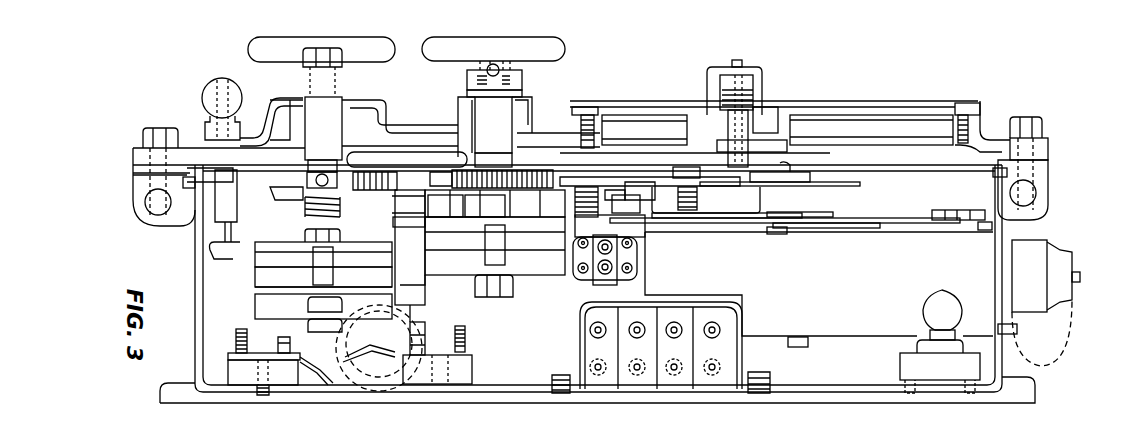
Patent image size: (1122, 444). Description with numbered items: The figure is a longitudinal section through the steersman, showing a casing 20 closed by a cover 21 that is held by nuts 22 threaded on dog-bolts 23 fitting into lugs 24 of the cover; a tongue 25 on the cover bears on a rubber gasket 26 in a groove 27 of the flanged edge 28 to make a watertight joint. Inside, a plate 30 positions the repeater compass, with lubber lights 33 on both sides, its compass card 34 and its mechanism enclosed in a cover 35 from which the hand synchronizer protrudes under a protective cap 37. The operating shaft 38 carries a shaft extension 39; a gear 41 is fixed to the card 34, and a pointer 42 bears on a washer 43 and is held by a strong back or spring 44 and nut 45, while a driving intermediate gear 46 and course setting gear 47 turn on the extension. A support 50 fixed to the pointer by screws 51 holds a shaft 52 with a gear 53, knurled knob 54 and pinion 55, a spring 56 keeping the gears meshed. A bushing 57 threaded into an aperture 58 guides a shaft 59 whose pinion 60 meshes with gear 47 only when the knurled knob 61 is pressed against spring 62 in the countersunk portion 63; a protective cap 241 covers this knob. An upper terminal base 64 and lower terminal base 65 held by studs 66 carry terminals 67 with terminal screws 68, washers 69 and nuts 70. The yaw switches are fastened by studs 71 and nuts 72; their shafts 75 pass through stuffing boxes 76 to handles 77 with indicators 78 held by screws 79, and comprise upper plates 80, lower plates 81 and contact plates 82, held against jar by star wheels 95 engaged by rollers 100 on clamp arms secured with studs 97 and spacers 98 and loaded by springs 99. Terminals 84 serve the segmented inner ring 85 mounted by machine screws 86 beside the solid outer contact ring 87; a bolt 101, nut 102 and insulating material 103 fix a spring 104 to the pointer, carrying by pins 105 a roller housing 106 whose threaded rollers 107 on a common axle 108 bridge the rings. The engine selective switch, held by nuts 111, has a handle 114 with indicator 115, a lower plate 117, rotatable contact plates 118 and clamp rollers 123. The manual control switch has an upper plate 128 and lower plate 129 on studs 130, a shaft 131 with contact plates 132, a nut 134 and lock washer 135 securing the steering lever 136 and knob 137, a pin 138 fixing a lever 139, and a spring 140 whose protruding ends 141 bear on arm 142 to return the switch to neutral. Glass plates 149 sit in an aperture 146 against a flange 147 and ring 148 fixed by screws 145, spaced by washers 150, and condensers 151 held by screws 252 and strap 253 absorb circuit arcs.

The casing 20 is at (1003, 233).
The cover 21 is at (990, 135).
The nuts 22 is at (143, 135).
The dog-bolts 23 is at (1040, 170).
The lugs 24 is at (1049, 155).
The tongue 25 is at (187, 174).
The rubber gasket 26 is at (196, 182).
The groove 27 is at (167, 224).
The flanged edge 28 is at (180, 224).
The plate 30 is at (987, 230).
The lubber lights 33 is at (900, 358).
The compass card 34 is at (808, 228).
The cover 35 is at (819, 289).
The protective cap 37 is at (1073, 252).
The operating shaft 38 is at (783, 234).
The shaft extension 39 is at (790, 186).
The gear 41 is at (835, 217).
The pointer 42 is at (865, 211).
The washer 43 is at (786, 164).
The strong back or spring 44 is at (738, 192).
The nut 45 is at (772, 195).
The driving intermediate gear 46 is at (803, 180).
The course setting gear 47 is at (845, 184).
The support 50 is at (678, 197).
The screws 51 is at (721, 199).
The shaft 52 is at (697, 195).
The gear 53 is at (655, 165).
The knurled knob 54 is at (650, 180).
The pinion 55 is at (680, 218).
The spring 56 is at (687, 187).
The bushing 57 is at (762, 117).
The aperture 58 is at (748, 147).
The shaft 59 is at (742, 137).
The pinion 60 is at (727, 167).
The knurled knob 61 is at (720, 90).
The spring 62 is at (758, 100).
The countersunk portion 63 is at (757, 112).
The upper terminal base 64 is at (472, 372).
The lower terminal base 65 is at (263, 372).
The studs 66 is at (273, 384).
The terminals 67 is at (347, 365).
The terminal screws 68 is at (426, 332).
The washers 69 is at (235, 349).
The nuts 70 is at (278, 341).
The studs 71 is at (495, 245).
The nuts 72 is at (513, 283).
The shafts 75 is at (494, 128).
The stuffing boxes 76 is at (465, 117).
The handles 77 is at (493, 53).
The pointers or indicators 78 is at (533, 100).
The screws 79 is at (522, 85).
The upper plates 80 is at (409, 247).
The lower plates 81 is at (433, 276).
The contact plates 82 is at (495, 246).
The terminals 84 is at (583, 280).
The inner ring 85 is at (940, 210).
The machine screws 86 is at (957, 210).
The solid outer contact ring 87 is at (972, 210).
The star wheels 95 is at (468, 205).
The studs 97 is at (433, 222).
The spacers 98 is at (409, 227).
The springs 99 is at (476, 180).
The rollers 100 is at (425, 212).
The bolt 101 is at (628, 182).
The nut 102 is at (639, 211).
The insulating material 103 is at (624, 205).
The spring 104 is at (607, 183).
The pins 105 is at (587, 197).
The roller housing 106 is at (575, 197).
The threaded rollers 107 is at (573, 226).
The common axle 108 is at (597, 260).
The nuts 111 is at (340, 329).
The handle 114 is at (321, 49).
The indicator 115 is at (377, 100).
The lower plate 117 is at (413, 305).
The rotatable contact plates 118 is at (323, 309).
The rollers 123 is at (385, 200).
The upper plate 128 is at (248, 268).
The lower plate 129 is at (255, 292).
The studs 130 is at (325, 266).
The shaft 131 is at (323, 254).
The contact plates 132 is at (323, 267).
The nut 134 is at (340, 58).
The lock washer 135 is at (344, 68).
The steering lever 136 is at (253, 128).
The knob 137 is at (203, 97).
The pin 138 is at (322, 183).
The lever 139 is at (286, 191).
The spring 140 is at (340, 235).
The protruding ends 141 is at (225, 215).
The arm 142 is at (247, 257).
The screws 145 is at (967, 107).
The aperture 146 is at (887, 147).
The flange 147 is at (943, 147).
The ring 148 is at (953, 103).
The glass plates 149 is at (887, 120).
The washers 150 is at (580, 122).
The condensers 151 is at (647, 383).
The protective cap 241 is at (708, 70).
The screws 252 is at (562, 376).
The strap 253 is at (580, 335).